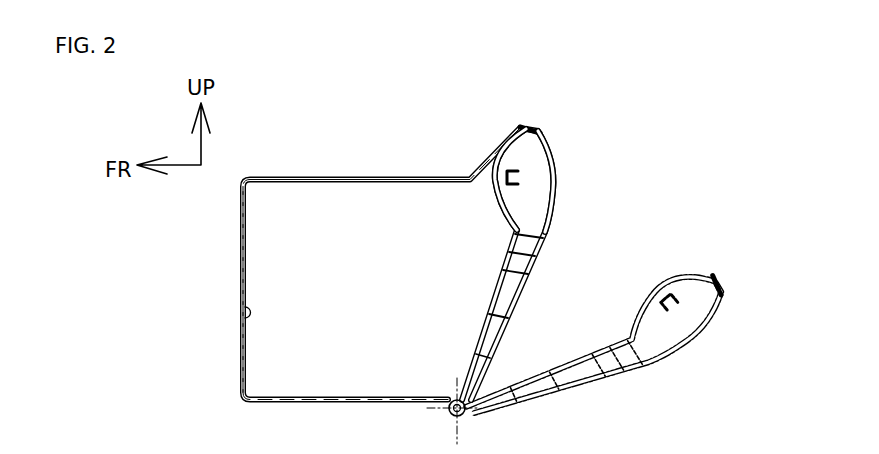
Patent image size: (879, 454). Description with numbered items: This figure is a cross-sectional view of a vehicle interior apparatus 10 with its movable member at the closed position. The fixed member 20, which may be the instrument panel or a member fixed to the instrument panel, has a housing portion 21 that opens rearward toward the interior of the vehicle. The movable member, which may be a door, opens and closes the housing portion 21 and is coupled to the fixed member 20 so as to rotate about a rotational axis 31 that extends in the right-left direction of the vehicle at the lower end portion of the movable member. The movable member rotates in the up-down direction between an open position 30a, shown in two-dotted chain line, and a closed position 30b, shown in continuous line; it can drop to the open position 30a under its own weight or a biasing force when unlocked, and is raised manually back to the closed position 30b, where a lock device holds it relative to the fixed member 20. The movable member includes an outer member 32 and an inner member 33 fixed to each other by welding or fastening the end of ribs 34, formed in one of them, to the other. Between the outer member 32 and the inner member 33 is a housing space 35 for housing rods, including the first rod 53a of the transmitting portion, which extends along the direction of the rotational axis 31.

The vehicle body panel 10 is at (415, 176).
The fixed member 20 is at (362, 177).
The housing portion 21 is at (243, 306).
The open position 30a is at (688, 343).
The closed position 30b is at (552, 171).
The rotational axis 31 is at (469, 421).
The outer member 32 is at (550, 209).
The inner member 33 is at (508, 210).
The ribs 34 is at (528, 254).
The housing space 35 is at (536, 157).
The first rod 53a is at (507, 188).